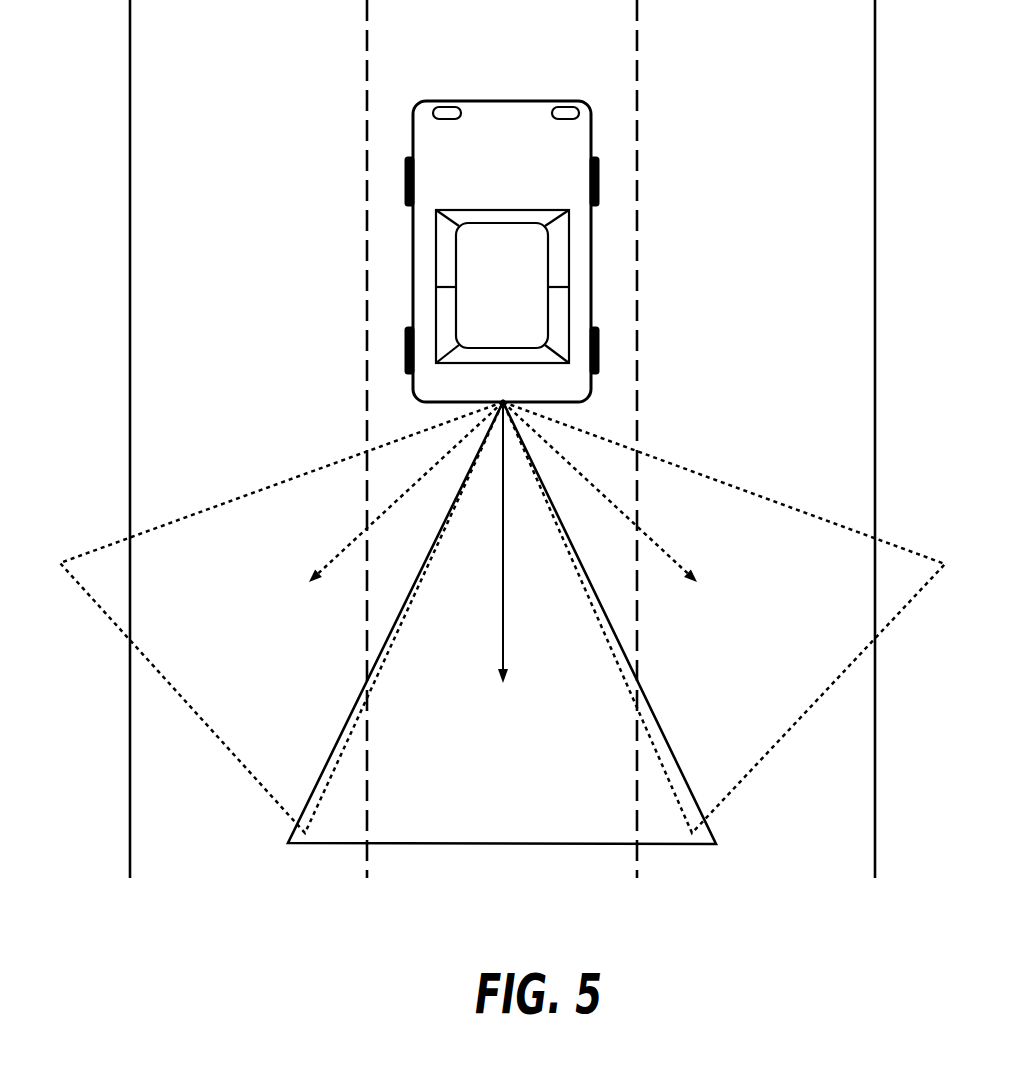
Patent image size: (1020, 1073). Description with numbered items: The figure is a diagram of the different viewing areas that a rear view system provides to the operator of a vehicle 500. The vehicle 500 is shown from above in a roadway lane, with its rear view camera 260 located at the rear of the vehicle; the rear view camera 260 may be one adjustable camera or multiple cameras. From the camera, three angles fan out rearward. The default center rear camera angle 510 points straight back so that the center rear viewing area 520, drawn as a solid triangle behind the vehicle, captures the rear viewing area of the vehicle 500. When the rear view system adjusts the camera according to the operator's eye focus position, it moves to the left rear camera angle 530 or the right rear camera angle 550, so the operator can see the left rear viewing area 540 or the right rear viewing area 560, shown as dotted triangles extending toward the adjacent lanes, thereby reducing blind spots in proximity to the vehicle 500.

The vehicle 500 is at (489, 220).
The rear view camera 260 is at (535, 388).
The center rear camera angle 510 is at (454, 575).
The center rear viewing area 520 is at (502, 669).
The left rear camera angle 530 is at (340, 493).
The left rear viewing area 540 is at (281, 615).
The right rear camera angle 550 is at (662, 492).
The right rear viewing area 560 is at (724, 617).